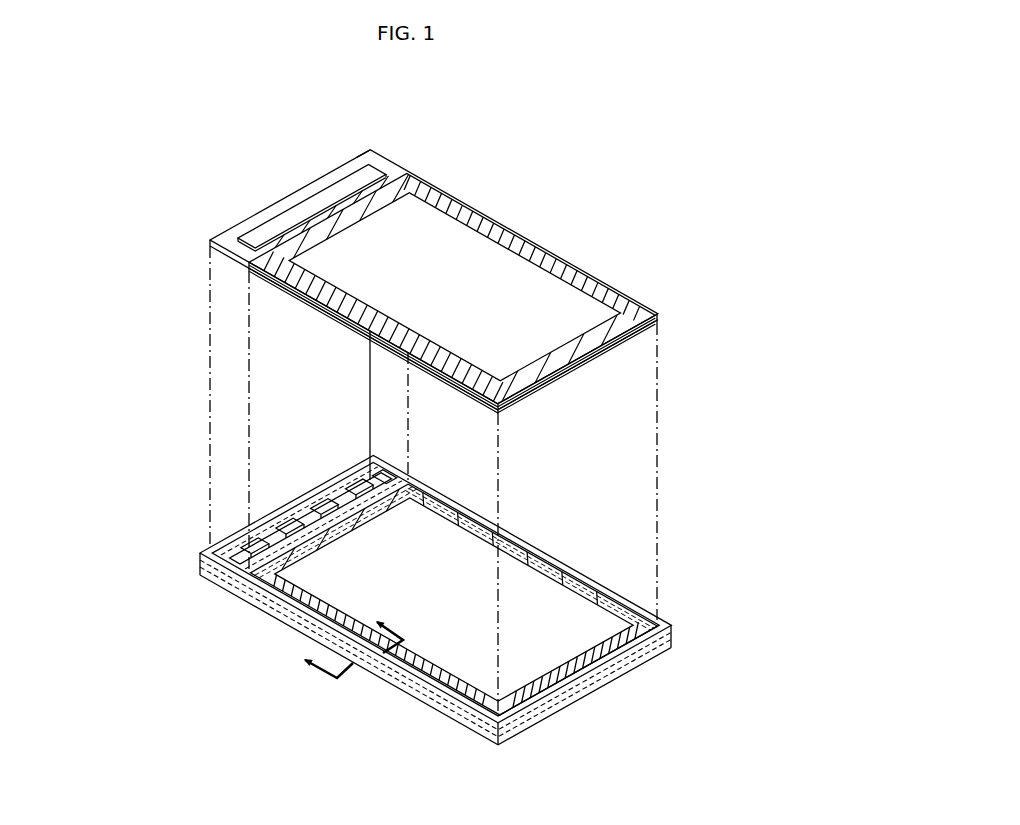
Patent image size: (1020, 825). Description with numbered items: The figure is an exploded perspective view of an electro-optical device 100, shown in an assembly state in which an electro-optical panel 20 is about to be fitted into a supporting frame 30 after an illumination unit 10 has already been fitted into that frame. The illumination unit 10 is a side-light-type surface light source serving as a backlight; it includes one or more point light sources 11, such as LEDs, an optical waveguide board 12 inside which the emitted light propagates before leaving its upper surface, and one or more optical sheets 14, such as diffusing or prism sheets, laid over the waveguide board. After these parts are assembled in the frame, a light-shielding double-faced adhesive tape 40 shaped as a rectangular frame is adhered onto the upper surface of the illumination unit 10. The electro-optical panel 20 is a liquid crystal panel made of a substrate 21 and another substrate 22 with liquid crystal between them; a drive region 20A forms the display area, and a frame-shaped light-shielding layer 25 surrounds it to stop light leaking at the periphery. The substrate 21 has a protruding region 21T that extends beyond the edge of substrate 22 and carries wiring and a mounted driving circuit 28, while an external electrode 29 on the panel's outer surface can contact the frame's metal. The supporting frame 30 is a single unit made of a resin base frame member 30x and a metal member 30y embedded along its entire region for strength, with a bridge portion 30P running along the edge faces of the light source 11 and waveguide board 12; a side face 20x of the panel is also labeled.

The electro-optical device 100 is at (100, 356).
The illumination unit 10 is at (448, 633).
The light source 11 is at (310, 506).
The optical waveguide board 12 is at (230, 559).
The optical sheet 14 is at (525, 602).
The electro-optical panel 20 is at (466, 263).
The drive region 20A is at (462, 290).
The side face 20x is at (322, 306).
The substrate 21 is at (572, 364).
The protruding region 21T is at (380, 167).
The substrate 22 is at (535, 240).
The light-shielding layer 25 is at (307, 237).
The driving circuit 28 is at (347, 183).
The external electrode 29 is at (467, 202).
The supporting frame 30 is at (307, 636).
The bridge portion 30P is at (383, 477).
The resin base frame member 30x is at (537, 727).
The metal member 30y is at (585, 707).
The light-shielding double-faced adhesive tape 40 is at (470, 530).